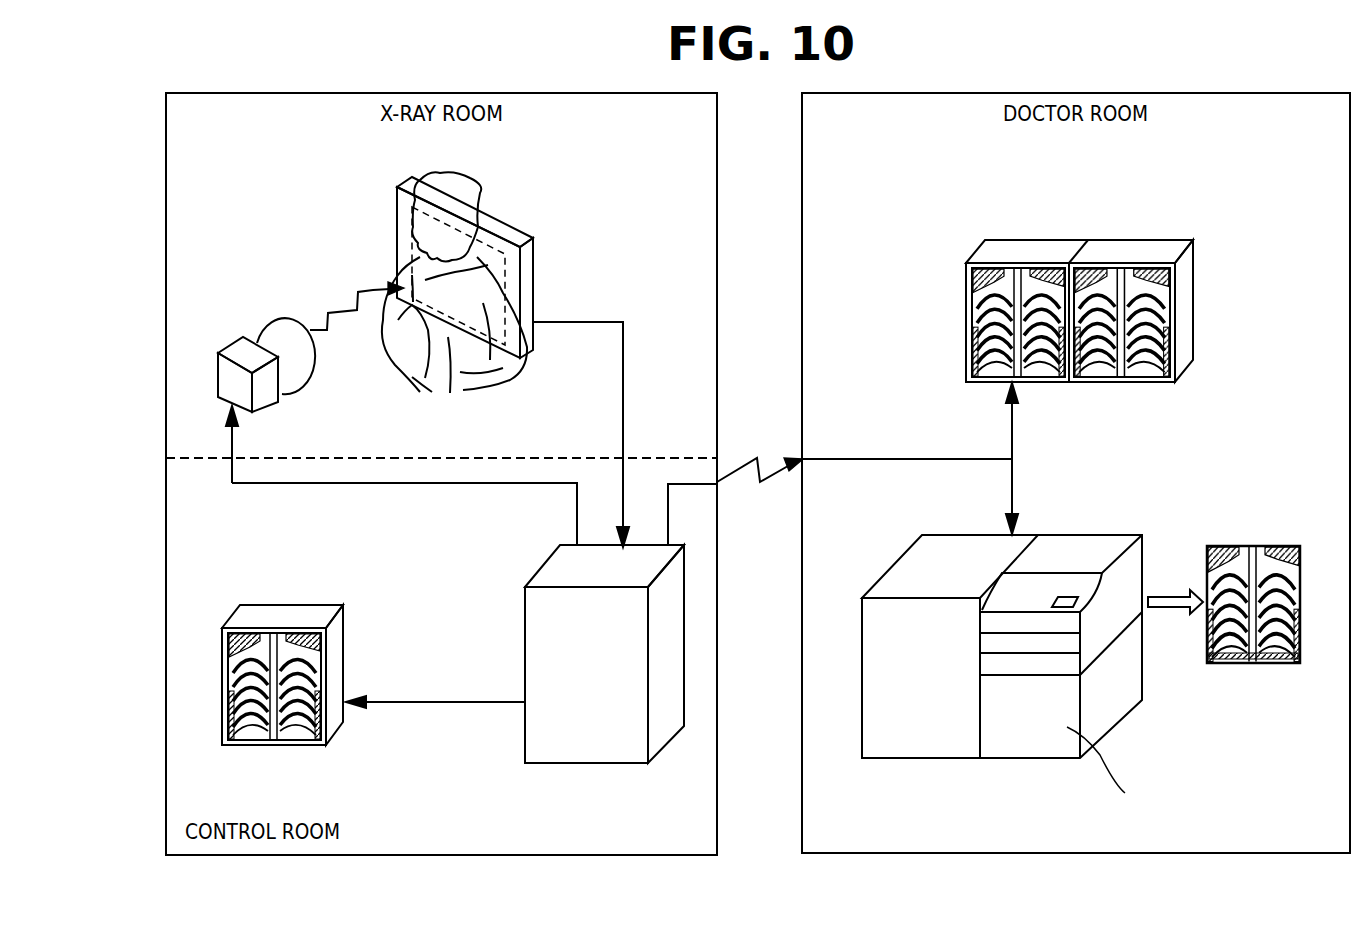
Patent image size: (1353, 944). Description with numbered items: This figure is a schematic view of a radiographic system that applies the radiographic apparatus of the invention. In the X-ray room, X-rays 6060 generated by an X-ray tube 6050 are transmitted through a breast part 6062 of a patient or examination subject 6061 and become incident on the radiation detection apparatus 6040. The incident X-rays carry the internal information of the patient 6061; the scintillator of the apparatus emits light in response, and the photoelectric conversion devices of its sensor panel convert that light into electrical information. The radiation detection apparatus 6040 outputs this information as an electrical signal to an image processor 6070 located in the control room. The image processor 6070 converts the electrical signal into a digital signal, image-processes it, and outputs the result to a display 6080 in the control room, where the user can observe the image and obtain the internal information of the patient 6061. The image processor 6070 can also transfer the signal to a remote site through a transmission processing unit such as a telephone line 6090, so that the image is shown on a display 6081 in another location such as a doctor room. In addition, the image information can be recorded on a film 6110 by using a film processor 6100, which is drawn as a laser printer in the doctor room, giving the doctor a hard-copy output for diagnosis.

The radiation detection apparatus 6040 is at (397, 223).
The X-ray tube 6050 is at (225, 350).
The X-rays 6060 is at (350, 313).
The patient 6061 is at (466, 178).
The breast part 6062 is at (450, 393).
The image processor 6070 is at (535, 732).
The display 6080 is at (268, 615).
The display 6081 is at (1005, 238).
The telephone line 6090 is at (743, 462).
The film processor 6100 is at (883, 752).
The film 6110 is at (1230, 665).